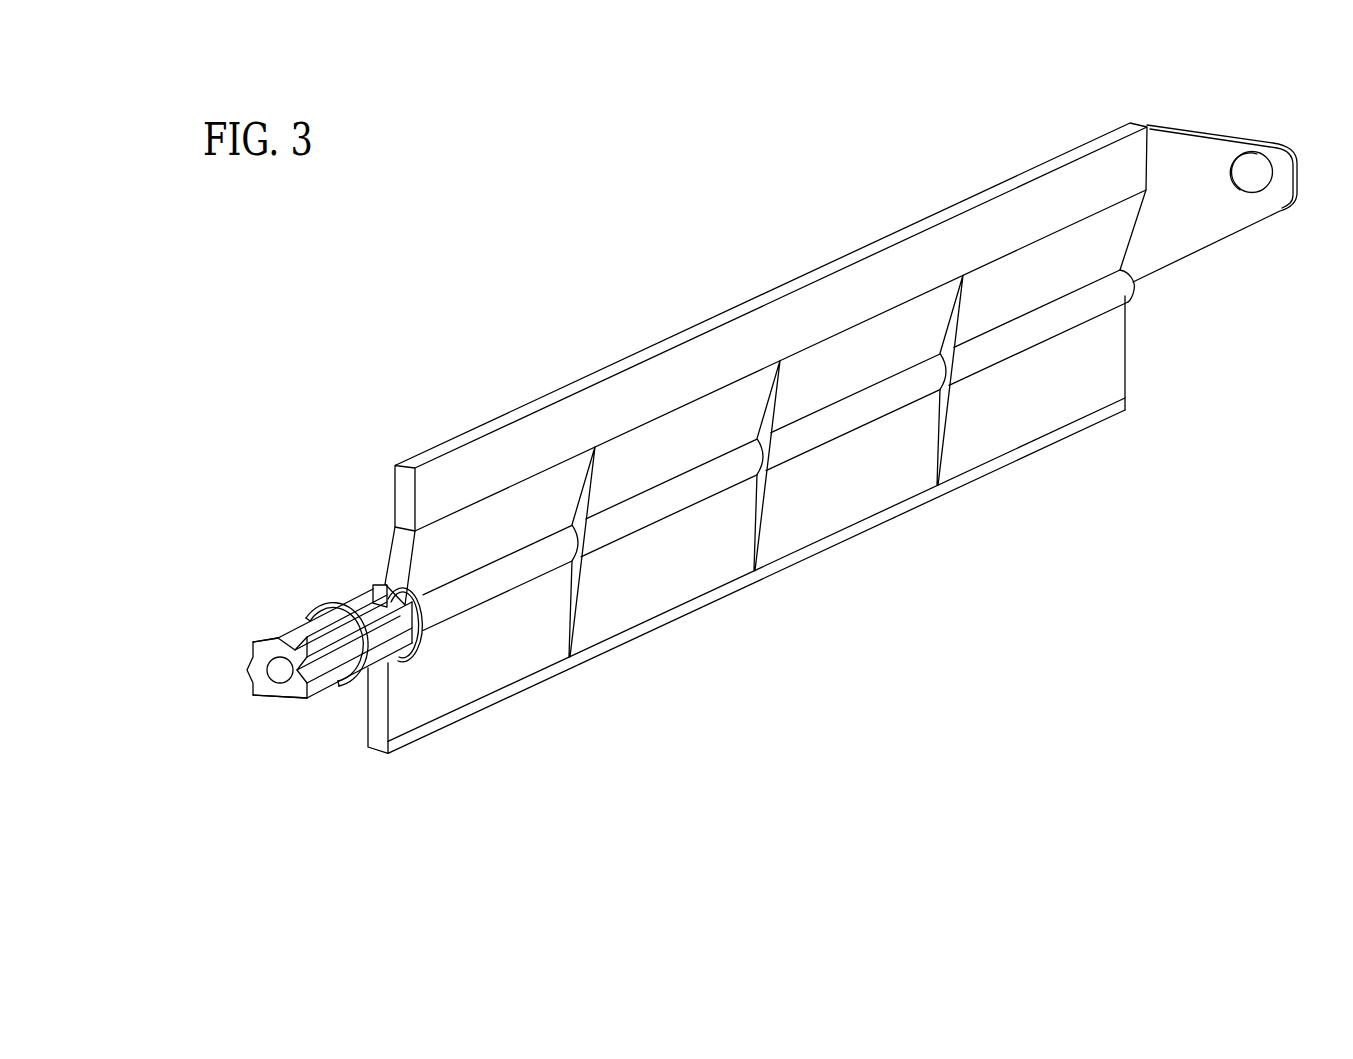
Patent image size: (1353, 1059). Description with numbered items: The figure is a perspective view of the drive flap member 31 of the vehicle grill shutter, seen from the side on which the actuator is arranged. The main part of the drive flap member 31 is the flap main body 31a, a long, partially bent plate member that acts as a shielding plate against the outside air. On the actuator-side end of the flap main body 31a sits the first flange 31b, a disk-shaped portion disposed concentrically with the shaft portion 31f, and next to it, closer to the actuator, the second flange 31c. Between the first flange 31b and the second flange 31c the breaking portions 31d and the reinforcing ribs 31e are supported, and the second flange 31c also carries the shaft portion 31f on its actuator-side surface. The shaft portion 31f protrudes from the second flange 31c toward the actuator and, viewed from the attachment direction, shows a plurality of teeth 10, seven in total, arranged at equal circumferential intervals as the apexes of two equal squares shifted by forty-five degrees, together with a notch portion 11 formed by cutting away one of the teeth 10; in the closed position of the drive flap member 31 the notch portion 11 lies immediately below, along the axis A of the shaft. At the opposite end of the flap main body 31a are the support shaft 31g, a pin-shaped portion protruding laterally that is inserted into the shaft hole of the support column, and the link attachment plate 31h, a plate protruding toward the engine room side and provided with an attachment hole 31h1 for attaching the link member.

The drive flap member 31 is at (748, 406).
The flap main body 31a is at (662, 350).
The first flange 31b is at (424, 633).
The second flange 31c is at (303, 614).
The breaking portions 31d is at (399, 677).
The reinforcing ribs 31e is at (350, 587).
The shaft portion 31f is at (239, 626).
The support shaft 31g is at (1135, 288).
The link attachment plate 31h is at (1215, 171).
The attachment hole 31h1 is at (1257, 157).
The teeth 10 is at (292, 669).
The notch portion 11 is at (275, 700).
The rotation axis A is at (270, 676).